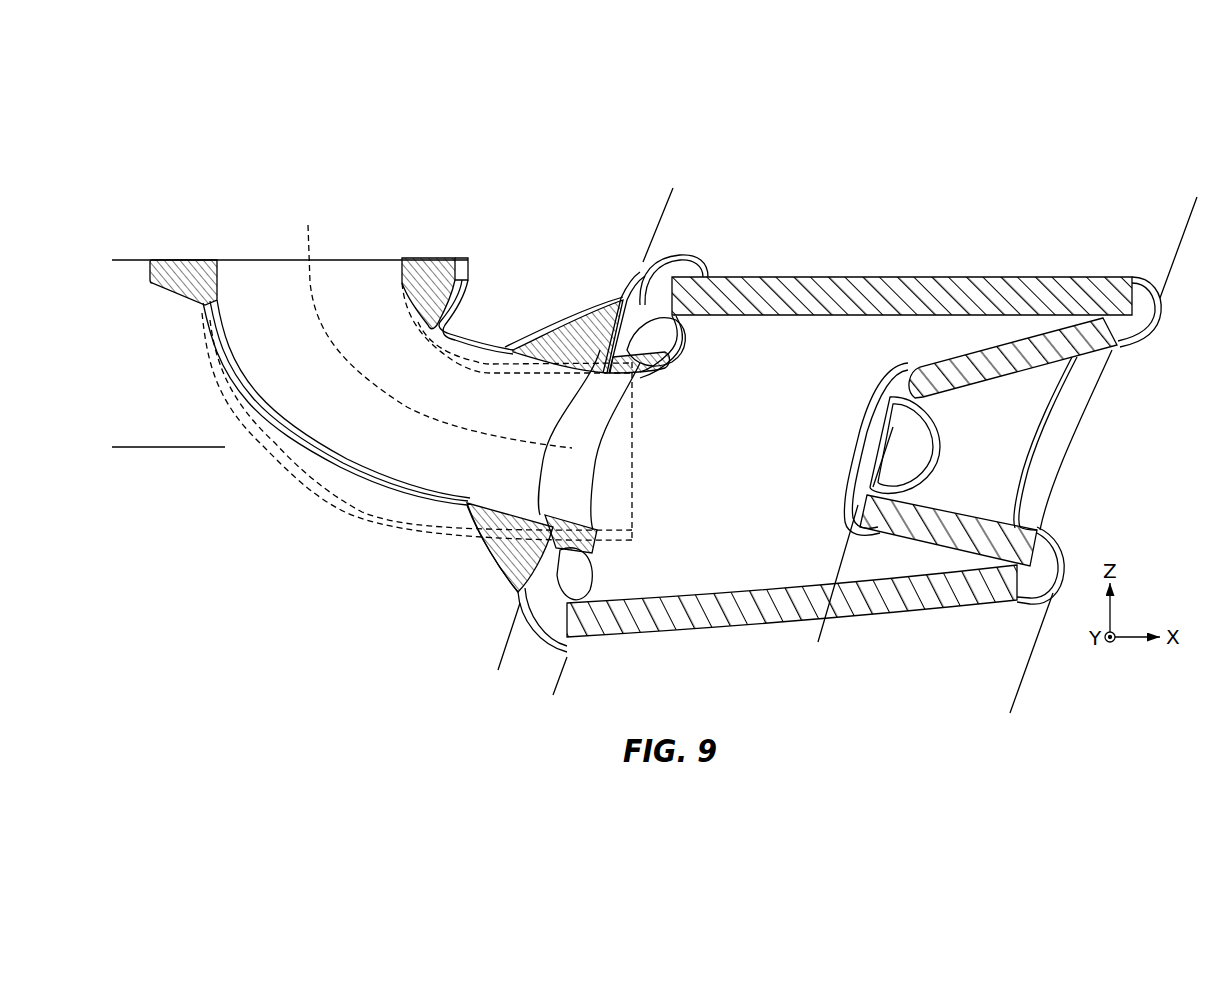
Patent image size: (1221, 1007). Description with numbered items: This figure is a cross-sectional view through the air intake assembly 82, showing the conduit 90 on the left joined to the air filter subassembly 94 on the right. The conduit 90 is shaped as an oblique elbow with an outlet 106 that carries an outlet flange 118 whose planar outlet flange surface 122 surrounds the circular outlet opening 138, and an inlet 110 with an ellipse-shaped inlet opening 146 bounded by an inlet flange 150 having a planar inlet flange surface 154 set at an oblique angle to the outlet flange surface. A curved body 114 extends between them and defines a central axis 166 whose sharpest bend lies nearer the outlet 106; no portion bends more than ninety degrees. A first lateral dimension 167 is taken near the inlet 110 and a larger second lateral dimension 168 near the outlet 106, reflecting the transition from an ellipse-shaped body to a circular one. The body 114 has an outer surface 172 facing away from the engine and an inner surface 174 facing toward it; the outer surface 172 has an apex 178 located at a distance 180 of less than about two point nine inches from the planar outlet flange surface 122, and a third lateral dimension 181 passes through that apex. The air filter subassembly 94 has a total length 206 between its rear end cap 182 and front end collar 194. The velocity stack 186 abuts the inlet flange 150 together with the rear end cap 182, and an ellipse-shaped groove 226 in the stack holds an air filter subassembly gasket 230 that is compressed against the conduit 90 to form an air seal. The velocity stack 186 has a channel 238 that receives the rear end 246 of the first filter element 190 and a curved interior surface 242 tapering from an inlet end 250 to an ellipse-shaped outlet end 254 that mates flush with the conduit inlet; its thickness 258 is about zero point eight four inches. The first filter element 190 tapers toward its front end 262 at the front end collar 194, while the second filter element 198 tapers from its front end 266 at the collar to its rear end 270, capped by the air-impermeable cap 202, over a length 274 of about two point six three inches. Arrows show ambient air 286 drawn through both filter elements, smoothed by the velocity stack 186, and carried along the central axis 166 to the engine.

The air intake assembly 82 is at (672, 143).
The conduit 90 is at (530, 257).
The air filter subassembly 94 is at (793, 180).
The outlet 106 is at (390, 233).
The inlet 110 is at (463, 560).
The body 114 is at (537, 350).
The outlet flange 118 is at (468, 262).
The planar outlet flange surface 122 is at (192, 260).
The outlet opening 138 is at (257, 272).
The inlet opening 146 is at (477, 503).
The inlet flange 150 is at (497, 570).
The planar inlet flange surface 154 is at (637, 290).
The central axis 166 is at (310, 250).
The first lateral dimension 167 is at (463, 497).
The second lateral dimension 168 is at (217, 276).
The outer surface 172 is at (343, 475).
The inner surface 174 is at (457, 323).
The apex 178 is at (307, 445).
The distance 180 is at (126, 260).
The third lateral dimension 181 is at (412, 312).
The rear end cap 182 is at (665, 258).
The velocity stack 186 is at (683, 337).
The first filter element 190 is at (1017, 277).
The front end collar 194 is at (1153, 323).
The second filter element 198 is at (1033, 372).
The air-impermeable cap 202 is at (890, 363).
The total length 206 is at (1192, 210).
The ellipse-shaped groove 226 is at (597, 553).
The air filter subassembly gasket 230 is at (567, 523).
The channel 238 is at (583, 600).
The interior surface 242 is at (593, 413).
The rear end 246 is at (717, 280).
The inlet end 250 is at (683, 353).
The outlet end 254 is at (563, 360).
The thickness 258 is at (557, 687).
The front end 262 is at (1115, 280).
The front end 266 is at (1120, 373).
The rear end 270 is at (953, 365).
The length 274 is at (1013, 703).
The ambient air 286 is at (832, 258).